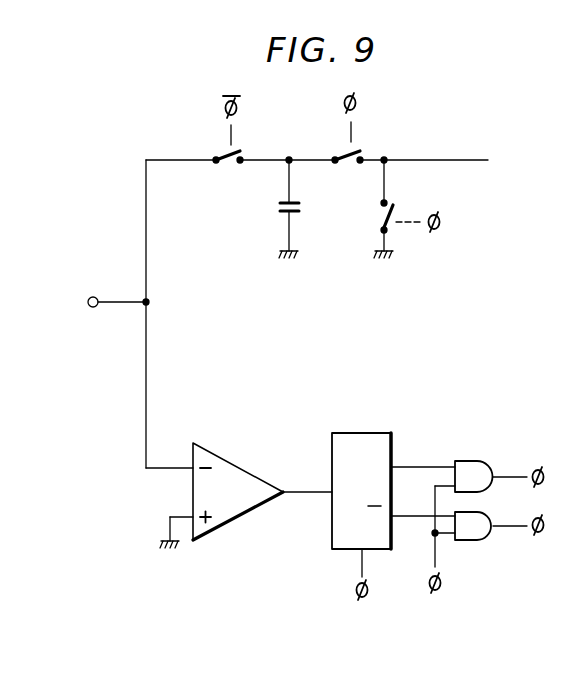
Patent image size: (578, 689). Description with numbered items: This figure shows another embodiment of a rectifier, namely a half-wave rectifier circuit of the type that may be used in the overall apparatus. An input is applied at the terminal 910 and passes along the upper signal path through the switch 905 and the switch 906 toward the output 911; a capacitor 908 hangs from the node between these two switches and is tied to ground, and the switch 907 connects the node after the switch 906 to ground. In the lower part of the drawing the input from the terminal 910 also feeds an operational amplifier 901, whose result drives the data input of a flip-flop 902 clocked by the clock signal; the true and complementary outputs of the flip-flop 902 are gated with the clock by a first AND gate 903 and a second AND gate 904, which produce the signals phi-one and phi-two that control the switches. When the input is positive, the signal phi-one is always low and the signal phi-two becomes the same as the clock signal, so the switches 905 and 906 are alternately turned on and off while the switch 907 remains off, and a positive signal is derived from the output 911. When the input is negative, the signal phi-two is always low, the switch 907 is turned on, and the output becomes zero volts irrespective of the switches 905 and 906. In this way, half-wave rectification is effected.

The operational amplifier 901 is at (262, 474).
The D flip-flop 902 is at (363, 432).
The AND gate 903 is at (488, 464).
The AND gate 904 is at (489, 539).
The switch 905 is at (241, 156).
The switch 906 is at (362, 155).
The switch 907 is at (395, 201).
The capacitor 908 is at (301, 206).
The input terminal 910 is at (111, 315).
The output 911 is at (444, 148).